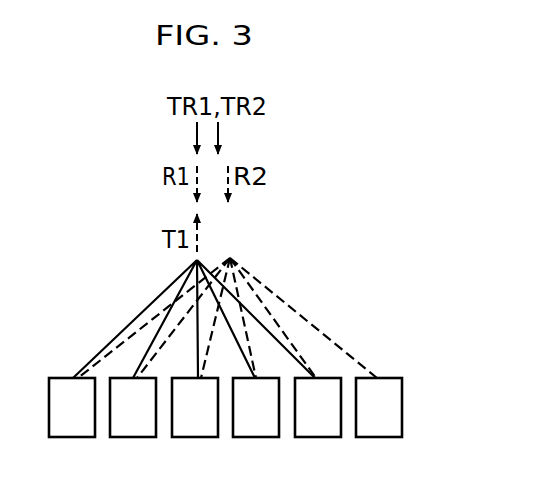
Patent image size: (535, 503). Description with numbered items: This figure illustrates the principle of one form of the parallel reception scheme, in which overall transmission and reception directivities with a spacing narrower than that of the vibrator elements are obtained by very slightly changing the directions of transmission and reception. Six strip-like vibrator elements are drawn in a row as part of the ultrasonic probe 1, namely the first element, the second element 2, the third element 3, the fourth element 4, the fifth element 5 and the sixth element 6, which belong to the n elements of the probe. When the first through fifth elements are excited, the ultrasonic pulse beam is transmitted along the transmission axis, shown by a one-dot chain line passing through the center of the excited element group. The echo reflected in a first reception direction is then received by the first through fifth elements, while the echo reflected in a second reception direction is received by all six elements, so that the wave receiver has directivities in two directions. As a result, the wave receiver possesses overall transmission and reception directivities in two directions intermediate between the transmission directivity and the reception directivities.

The ultrasonic probe 1 is at (252, 405).
The memory unit # 2 is at (133, 407).
The memory unit # 3 is at (195, 407).
The memory unit # 4 is at (256, 407).
The memory unit # 5 is at (318, 407).
The memory unit # 6 is at (379, 407).